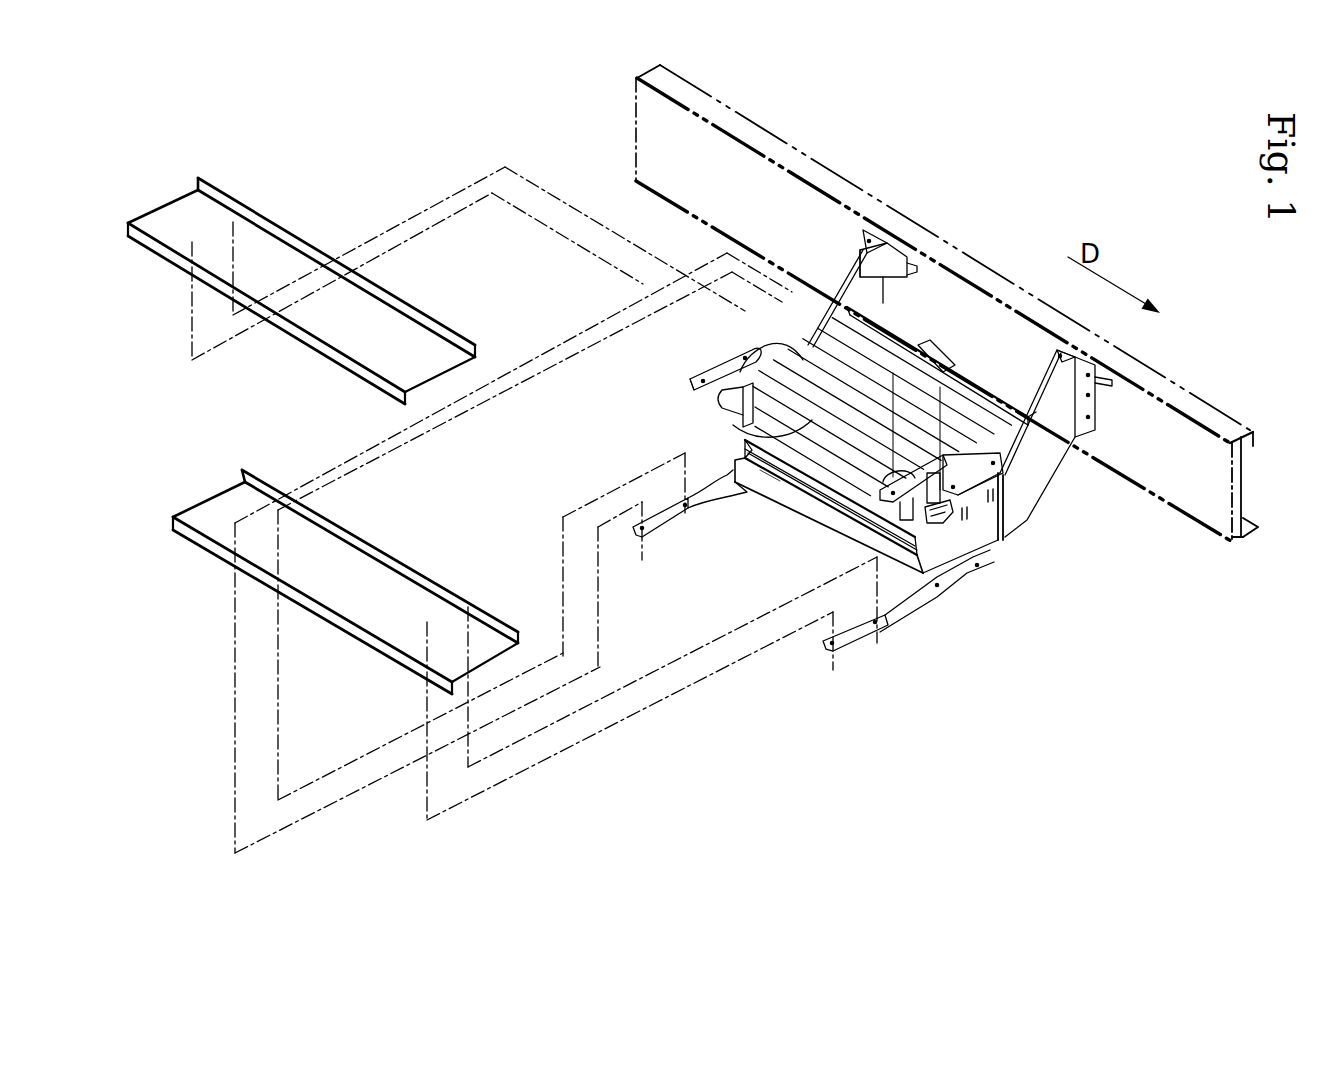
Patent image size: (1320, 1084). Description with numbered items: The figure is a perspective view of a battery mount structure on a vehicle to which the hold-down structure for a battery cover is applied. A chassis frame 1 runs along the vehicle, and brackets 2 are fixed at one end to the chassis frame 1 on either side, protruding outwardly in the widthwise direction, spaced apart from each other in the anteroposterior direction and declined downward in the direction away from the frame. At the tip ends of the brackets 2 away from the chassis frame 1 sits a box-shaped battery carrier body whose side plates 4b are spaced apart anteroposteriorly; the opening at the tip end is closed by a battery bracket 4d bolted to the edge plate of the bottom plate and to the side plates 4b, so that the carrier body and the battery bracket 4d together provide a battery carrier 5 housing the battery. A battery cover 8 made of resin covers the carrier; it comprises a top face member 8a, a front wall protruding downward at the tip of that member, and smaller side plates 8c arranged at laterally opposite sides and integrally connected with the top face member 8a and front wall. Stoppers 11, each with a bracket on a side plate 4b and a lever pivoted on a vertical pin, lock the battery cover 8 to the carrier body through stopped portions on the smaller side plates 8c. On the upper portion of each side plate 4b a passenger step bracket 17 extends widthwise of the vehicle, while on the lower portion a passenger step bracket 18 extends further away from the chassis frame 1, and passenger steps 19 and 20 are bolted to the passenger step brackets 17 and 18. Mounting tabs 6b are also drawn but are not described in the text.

The chassis frame 1 is at (1168, 470).
The brackets 2 is at (850, 290).
The side plates 4b is at (948, 560).
The battery bracket 4d is at (793, 502).
The battery carrier 5 is at (808, 541).
The mounting tab 6b is at (883, 323).
The battery cover 8 is at (817, 374).
The top face member 8a is at (750, 351).
The smaller side plates 8c is at (735, 426).
The stoppers 11 is at (955, 530).
The passenger step bracket 17 is at (742, 372).
The passenger step bracket 18 is at (660, 530).
The passenger step 19 is at (476, 347).
The passenger step 20 is at (385, 558).